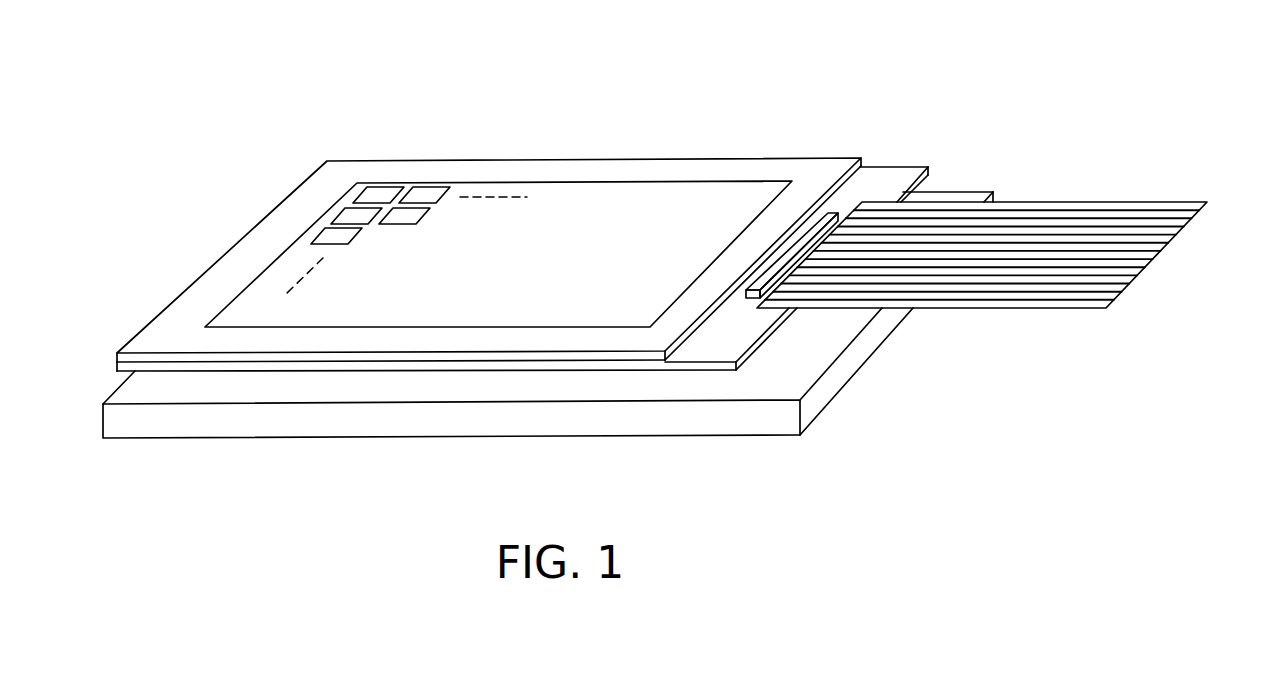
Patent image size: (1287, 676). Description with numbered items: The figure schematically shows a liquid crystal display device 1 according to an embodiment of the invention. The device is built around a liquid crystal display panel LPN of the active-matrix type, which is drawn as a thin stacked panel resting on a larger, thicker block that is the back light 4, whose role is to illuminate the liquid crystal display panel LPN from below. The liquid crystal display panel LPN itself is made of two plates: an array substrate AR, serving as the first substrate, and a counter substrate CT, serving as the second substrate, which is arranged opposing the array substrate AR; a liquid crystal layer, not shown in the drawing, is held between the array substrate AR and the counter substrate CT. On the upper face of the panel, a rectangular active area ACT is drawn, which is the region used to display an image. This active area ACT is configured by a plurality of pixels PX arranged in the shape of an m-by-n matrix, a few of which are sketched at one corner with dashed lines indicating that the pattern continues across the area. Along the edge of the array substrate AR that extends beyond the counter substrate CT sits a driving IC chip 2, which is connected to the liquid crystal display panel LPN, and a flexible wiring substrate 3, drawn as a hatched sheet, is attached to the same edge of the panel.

The liquid crystal display device 1 is at (955, 122).
The driving IC chip 2 is at (826, 218).
The flexible wiring substrate 3 is at (1137, 202).
The back light 4 is at (127, 424).
The liquid crystal display panel LPN is at (707, 378).
The array substrate AR is at (588, 363).
The counter substrate CT is at (527, 356).
The active area ACT is at (426, 335).
The pixel PX is at (387, 184).